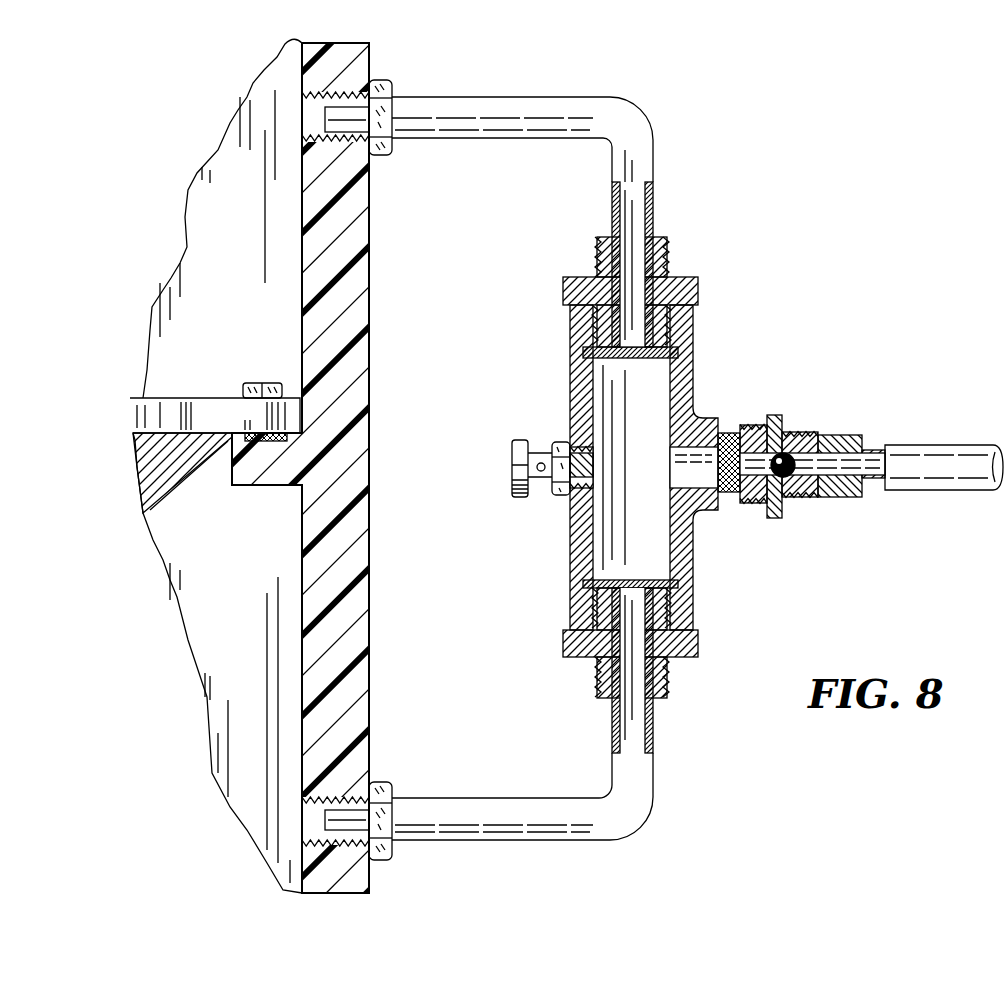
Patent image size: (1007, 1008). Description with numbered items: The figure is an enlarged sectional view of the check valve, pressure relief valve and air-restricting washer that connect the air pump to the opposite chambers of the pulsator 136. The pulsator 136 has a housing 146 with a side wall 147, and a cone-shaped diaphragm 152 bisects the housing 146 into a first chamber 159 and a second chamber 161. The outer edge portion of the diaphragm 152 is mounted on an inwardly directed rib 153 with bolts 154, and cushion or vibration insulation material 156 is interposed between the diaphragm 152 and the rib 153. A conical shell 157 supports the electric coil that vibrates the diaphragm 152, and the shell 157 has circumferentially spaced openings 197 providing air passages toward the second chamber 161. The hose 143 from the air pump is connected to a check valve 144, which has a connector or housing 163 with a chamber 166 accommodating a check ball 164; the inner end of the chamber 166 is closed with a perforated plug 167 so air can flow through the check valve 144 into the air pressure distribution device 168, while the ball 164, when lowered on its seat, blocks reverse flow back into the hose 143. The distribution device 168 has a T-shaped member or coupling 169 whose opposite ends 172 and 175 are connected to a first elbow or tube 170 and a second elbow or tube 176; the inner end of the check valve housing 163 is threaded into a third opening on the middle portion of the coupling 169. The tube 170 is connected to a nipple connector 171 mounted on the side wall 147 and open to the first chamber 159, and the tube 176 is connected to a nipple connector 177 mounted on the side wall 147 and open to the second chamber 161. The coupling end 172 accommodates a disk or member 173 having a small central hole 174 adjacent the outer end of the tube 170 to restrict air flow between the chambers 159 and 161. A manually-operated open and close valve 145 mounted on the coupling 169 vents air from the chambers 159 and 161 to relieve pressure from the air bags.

The pulsator 136 is at (389, 238).
The hose 143 is at (940, 455).
The check valve 144 is at (868, 412).
The manually-operated open and close valve 145 is at (510, 468).
The housing 146 is at (382, 322).
The side wall 147 is at (370, 632).
The cone-shaped diaphragm 152 is at (178, 408).
The inwardly directed rib 153 is at (270, 470).
The bolts 154 is at (262, 383).
The cushion or vibration insulation material 156 is at (275, 430).
The conical shell 157 is at (152, 492).
The first chamber 159 is at (244, 236).
The second chamber 161 is at (240, 631).
The connector or housing 163 is at (770, 508).
The check ball 164 is at (798, 432).
The chamber 166 is at (781, 452).
The perforated plug 167 is at (728, 500).
The air pressure distribution device 168 is at (708, 410).
The T-shaped member or coupling 169 is at (578, 541).
The first elbow or tube 170 is at (530, 104).
The nipple connector 171 is at (376, 83).
The coupling end 172 is at (694, 328).
The disk or member 173 is at (590, 354).
The small central hole 174 is at (630, 360).
The coupling end 175 is at (693, 606).
The second elbow or tube 176 is at (498, 800).
The nipple connector 177 is at (376, 782).
The openings 197 is at (190, 470).